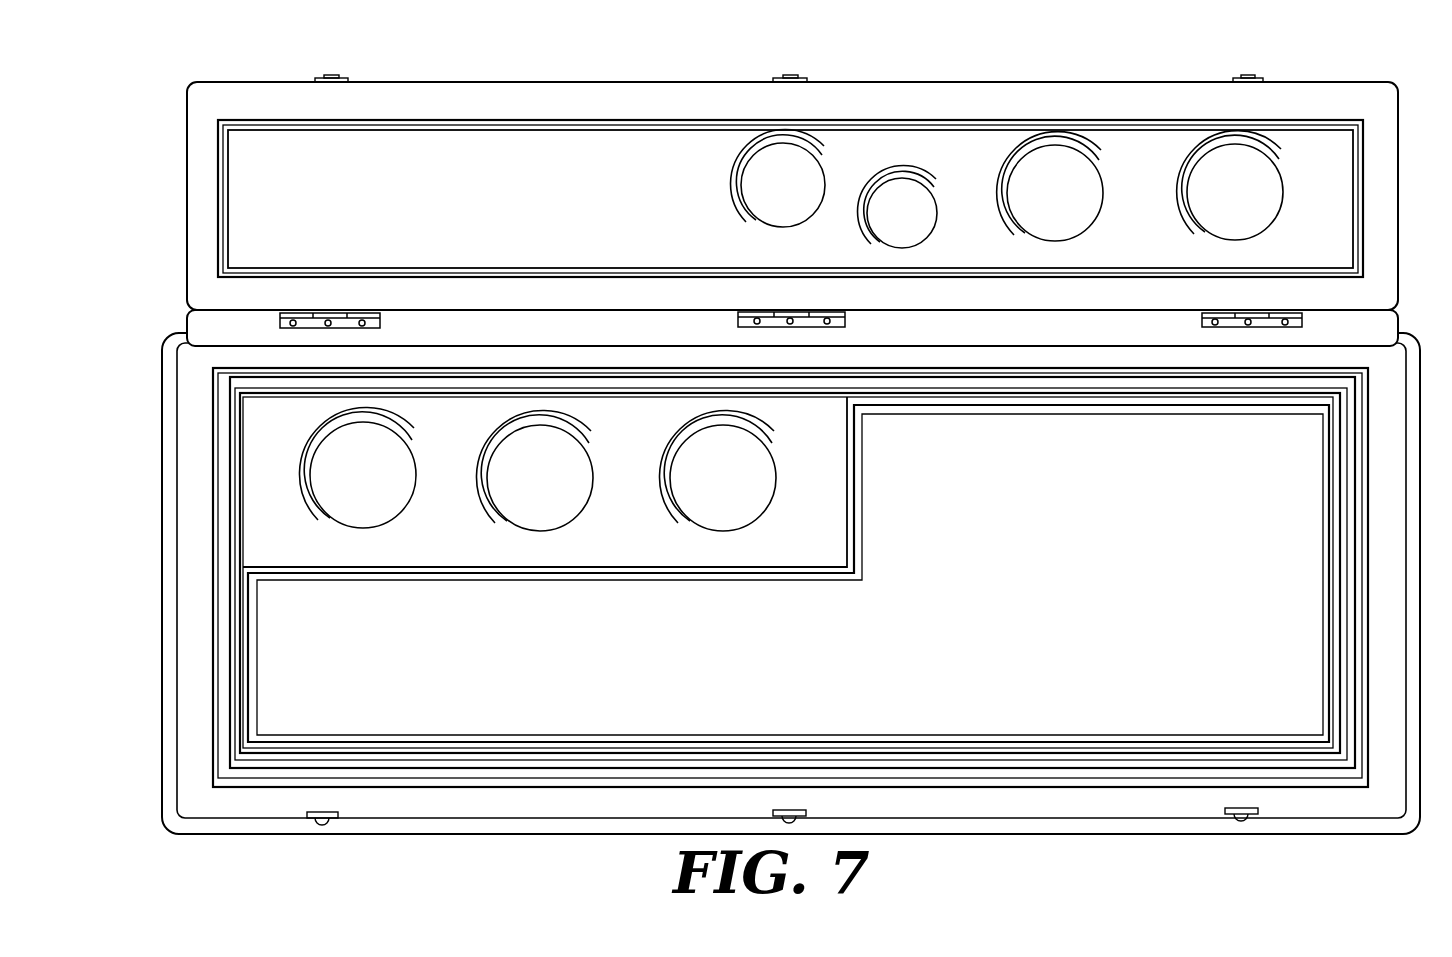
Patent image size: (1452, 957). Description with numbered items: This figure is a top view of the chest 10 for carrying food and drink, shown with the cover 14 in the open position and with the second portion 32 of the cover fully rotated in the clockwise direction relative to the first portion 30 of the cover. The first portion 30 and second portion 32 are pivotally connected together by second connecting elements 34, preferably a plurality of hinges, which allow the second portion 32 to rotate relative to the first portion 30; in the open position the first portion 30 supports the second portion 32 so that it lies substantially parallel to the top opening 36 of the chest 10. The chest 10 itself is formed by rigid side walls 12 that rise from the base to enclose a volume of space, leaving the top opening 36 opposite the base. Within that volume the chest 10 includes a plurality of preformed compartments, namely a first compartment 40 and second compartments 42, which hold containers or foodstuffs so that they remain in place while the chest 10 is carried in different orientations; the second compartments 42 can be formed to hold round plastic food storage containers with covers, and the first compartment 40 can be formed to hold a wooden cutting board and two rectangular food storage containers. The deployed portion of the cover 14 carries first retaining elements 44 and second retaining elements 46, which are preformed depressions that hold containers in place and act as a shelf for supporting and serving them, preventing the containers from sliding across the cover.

The chest 10 is at (660, 70).
The side walls 12 is at (1420, 594).
The cover 14 is at (1398, 243).
The first portion 30 is at (201, 163).
The second portion 32 is at (213, 328).
The second connecting elements 34 is at (362, 313).
The top opening 36 is at (1300, 452).
The first compartment 40 is at (1094, 595).
The second compartments 42 is at (374, 486).
The first retaining elements 44 is at (794, 189).
The second retaining elements 46 is at (913, 217).